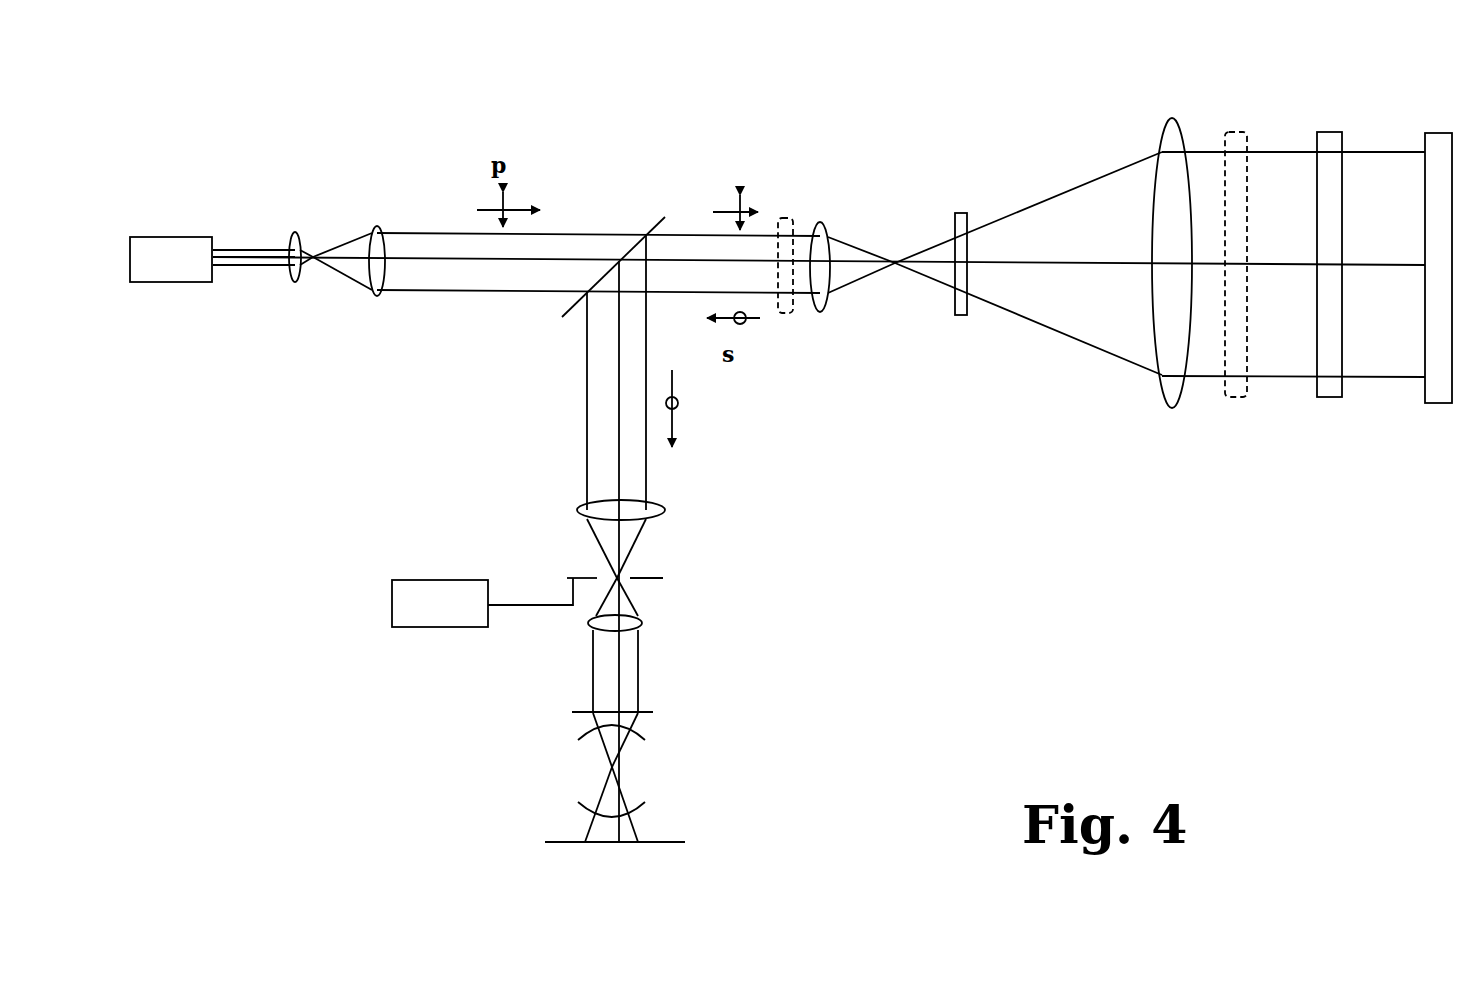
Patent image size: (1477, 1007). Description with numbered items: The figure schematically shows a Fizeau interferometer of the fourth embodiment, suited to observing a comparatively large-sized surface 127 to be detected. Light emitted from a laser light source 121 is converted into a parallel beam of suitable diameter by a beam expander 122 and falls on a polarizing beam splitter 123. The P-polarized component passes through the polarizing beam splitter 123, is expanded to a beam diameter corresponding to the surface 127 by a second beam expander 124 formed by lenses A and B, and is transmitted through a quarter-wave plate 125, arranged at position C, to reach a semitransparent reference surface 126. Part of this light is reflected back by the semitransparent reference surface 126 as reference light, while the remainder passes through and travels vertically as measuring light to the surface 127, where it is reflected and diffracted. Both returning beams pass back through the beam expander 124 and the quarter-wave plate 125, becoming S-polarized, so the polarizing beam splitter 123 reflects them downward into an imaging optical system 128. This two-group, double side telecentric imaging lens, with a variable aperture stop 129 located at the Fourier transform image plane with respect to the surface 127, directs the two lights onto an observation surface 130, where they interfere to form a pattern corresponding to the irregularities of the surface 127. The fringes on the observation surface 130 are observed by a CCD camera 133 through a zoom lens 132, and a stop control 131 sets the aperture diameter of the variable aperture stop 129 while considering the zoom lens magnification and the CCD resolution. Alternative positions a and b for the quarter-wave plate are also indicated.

The laser light source 121 is at (152, 238).
The beam expander 122 is at (407, 222).
The polarizing beam splitter 123 is at (652, 230).
The beam expander 124 is at (1117, 318).
The quarter-wave plate 125 is at (963, 213).
The semitransparent reference surface 126 is at (1344, 145).
The surface to be detected 127 is at (1423, 390).
The imaging optical system 128 is at (698, 502).
The variable aperture stop 129 is at (587, 574).
The observation surface 130 is at (645, 712).
The stop control 131 is at (438, 580).
The zoom lens 132 is at (668, 715).
The CCD camera 133 is at (660, 845).